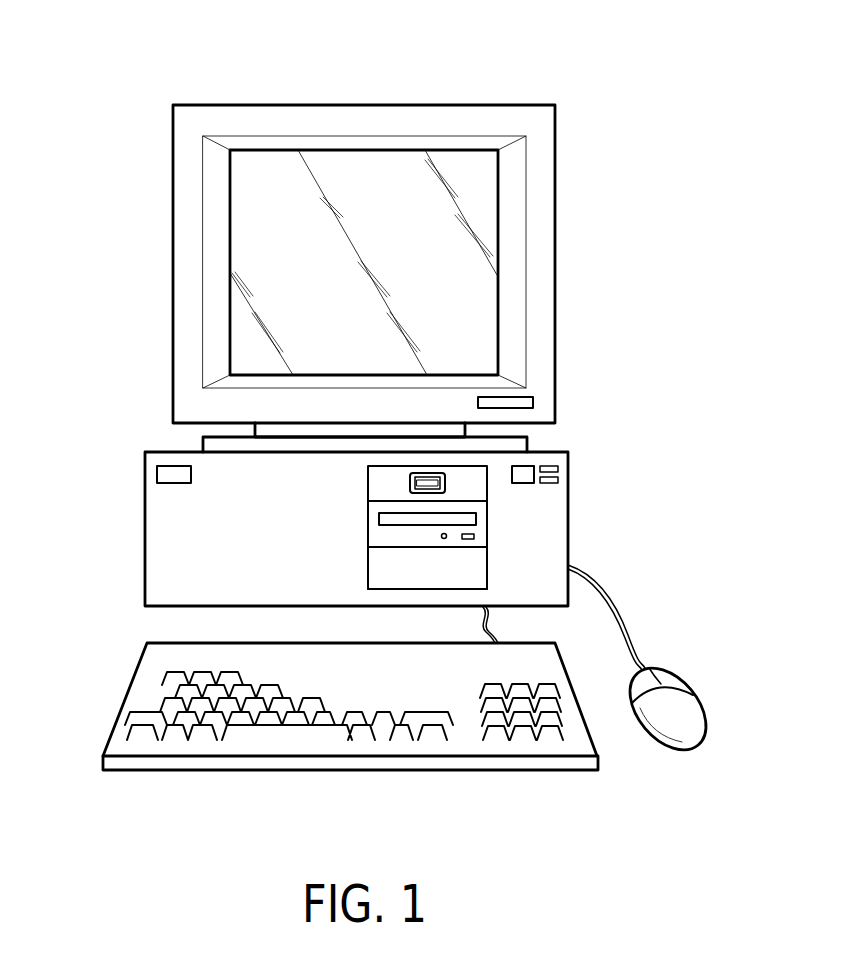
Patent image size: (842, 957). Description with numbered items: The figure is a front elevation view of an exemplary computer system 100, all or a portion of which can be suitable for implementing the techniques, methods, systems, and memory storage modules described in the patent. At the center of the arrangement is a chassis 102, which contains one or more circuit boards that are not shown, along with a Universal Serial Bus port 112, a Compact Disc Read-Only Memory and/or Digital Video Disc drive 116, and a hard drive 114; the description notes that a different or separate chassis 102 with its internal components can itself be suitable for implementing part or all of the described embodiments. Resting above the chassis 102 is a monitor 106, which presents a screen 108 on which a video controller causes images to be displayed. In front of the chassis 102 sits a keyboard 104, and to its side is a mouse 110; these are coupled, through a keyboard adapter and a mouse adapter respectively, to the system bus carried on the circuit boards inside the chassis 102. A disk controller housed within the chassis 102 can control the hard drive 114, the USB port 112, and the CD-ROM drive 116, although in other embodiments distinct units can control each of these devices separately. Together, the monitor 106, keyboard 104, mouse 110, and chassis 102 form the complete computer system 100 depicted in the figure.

The computer system 100 is at (552, 76).
The chassis 102 is at (145, 530).
The keyboard 104 is at (127, 700).
The monitor 106 is at (250, 105).
The screen 108 is at (280, 270).
The mouse 110 is at (688, 697).
The Universal Serial Bus (USB) port 112 is at (446, 480).
The hard drive 114 is at (478, 567).
The Compact Disc Read-Only Memory (CD-ROM) and/or Digital Video Disc (DVD) drive 116 is at (477, 525).